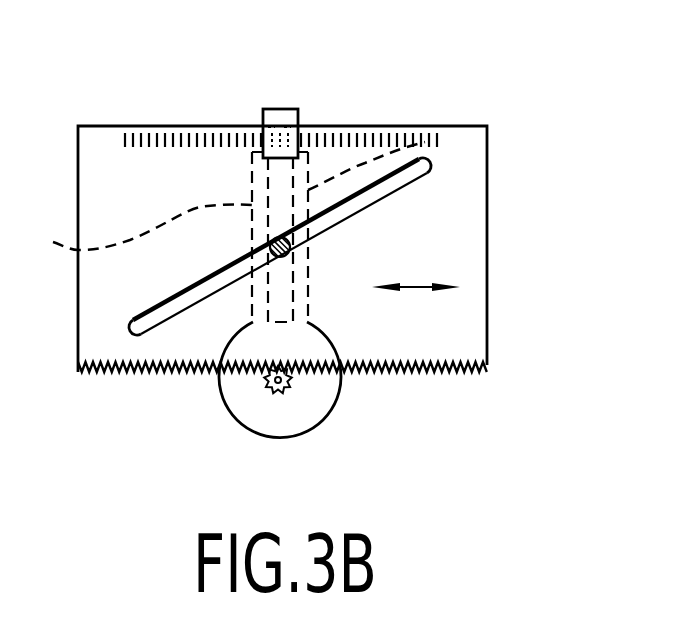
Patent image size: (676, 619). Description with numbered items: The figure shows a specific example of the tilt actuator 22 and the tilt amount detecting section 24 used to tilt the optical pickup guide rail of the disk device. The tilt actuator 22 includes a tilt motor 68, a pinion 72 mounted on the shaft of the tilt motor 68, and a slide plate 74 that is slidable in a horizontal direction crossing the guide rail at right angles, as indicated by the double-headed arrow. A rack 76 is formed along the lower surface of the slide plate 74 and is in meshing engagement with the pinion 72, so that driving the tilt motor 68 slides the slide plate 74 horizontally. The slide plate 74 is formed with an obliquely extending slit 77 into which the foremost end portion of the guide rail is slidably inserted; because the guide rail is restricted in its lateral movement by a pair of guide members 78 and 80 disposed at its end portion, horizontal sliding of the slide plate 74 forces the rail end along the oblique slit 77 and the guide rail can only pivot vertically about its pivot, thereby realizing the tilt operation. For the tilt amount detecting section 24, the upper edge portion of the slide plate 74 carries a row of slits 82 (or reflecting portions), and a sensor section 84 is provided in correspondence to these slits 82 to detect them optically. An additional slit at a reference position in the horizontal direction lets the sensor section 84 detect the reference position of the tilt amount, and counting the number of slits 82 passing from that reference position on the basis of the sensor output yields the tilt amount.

The tilt actuator 22 is at (378, 393).
The tilt amount detecting section 24 is at (358, 100).
The tilt motor 68 is at (325, 418).
The pinion 72 is at (272, 387).
The slide plate 74 is at (486, 265).
The rack 76 is at (133, 368).
The slit 77 is at (402, 189).
The guide member 78 is at (219, 202).
The guide member 80 is at (405, 150).
The slits 82 is at (103, 126).
The sensor section 84 is at (282, 106).